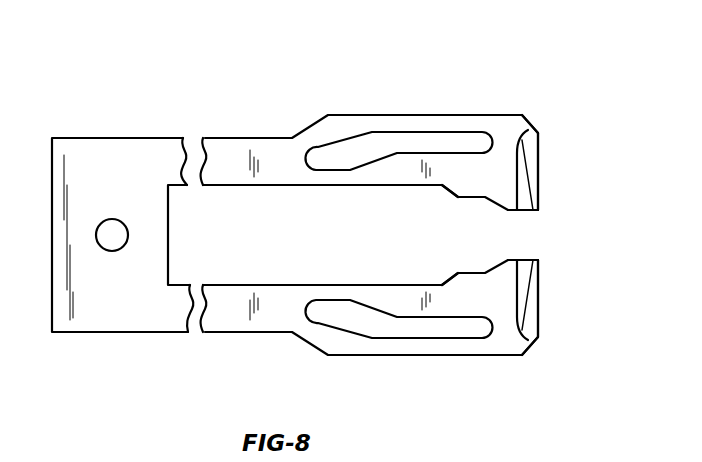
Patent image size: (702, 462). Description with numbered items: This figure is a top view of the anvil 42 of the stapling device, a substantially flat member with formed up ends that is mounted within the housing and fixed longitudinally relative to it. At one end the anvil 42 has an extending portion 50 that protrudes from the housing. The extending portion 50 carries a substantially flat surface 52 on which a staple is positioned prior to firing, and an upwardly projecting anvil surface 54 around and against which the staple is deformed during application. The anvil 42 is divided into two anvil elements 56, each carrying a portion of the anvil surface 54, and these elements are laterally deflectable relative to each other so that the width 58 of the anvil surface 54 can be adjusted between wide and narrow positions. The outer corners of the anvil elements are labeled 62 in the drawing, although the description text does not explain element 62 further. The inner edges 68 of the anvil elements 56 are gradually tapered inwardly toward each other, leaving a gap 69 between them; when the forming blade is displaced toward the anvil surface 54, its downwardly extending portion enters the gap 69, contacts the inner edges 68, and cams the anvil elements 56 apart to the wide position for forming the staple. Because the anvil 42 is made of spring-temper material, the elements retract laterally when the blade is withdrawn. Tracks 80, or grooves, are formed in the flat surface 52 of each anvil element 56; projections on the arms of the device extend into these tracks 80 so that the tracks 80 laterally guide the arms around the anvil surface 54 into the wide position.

The anvil 42 is at (230, 120).
The extending portion 50 is at (508, 90).
The flat surface 52 is at (497, 182).
The anvil surface 54 is at (533, 300).
The anvil elements 56 is at (298, 187).
The width of anvil surface 58 is at (541, 133).
The chamfered corners 62 is at (531, 127).
The inner edges 68 is at (457, 276).
The gap 69 is at (527, 237).
The tracks 80 is at (437, 143).